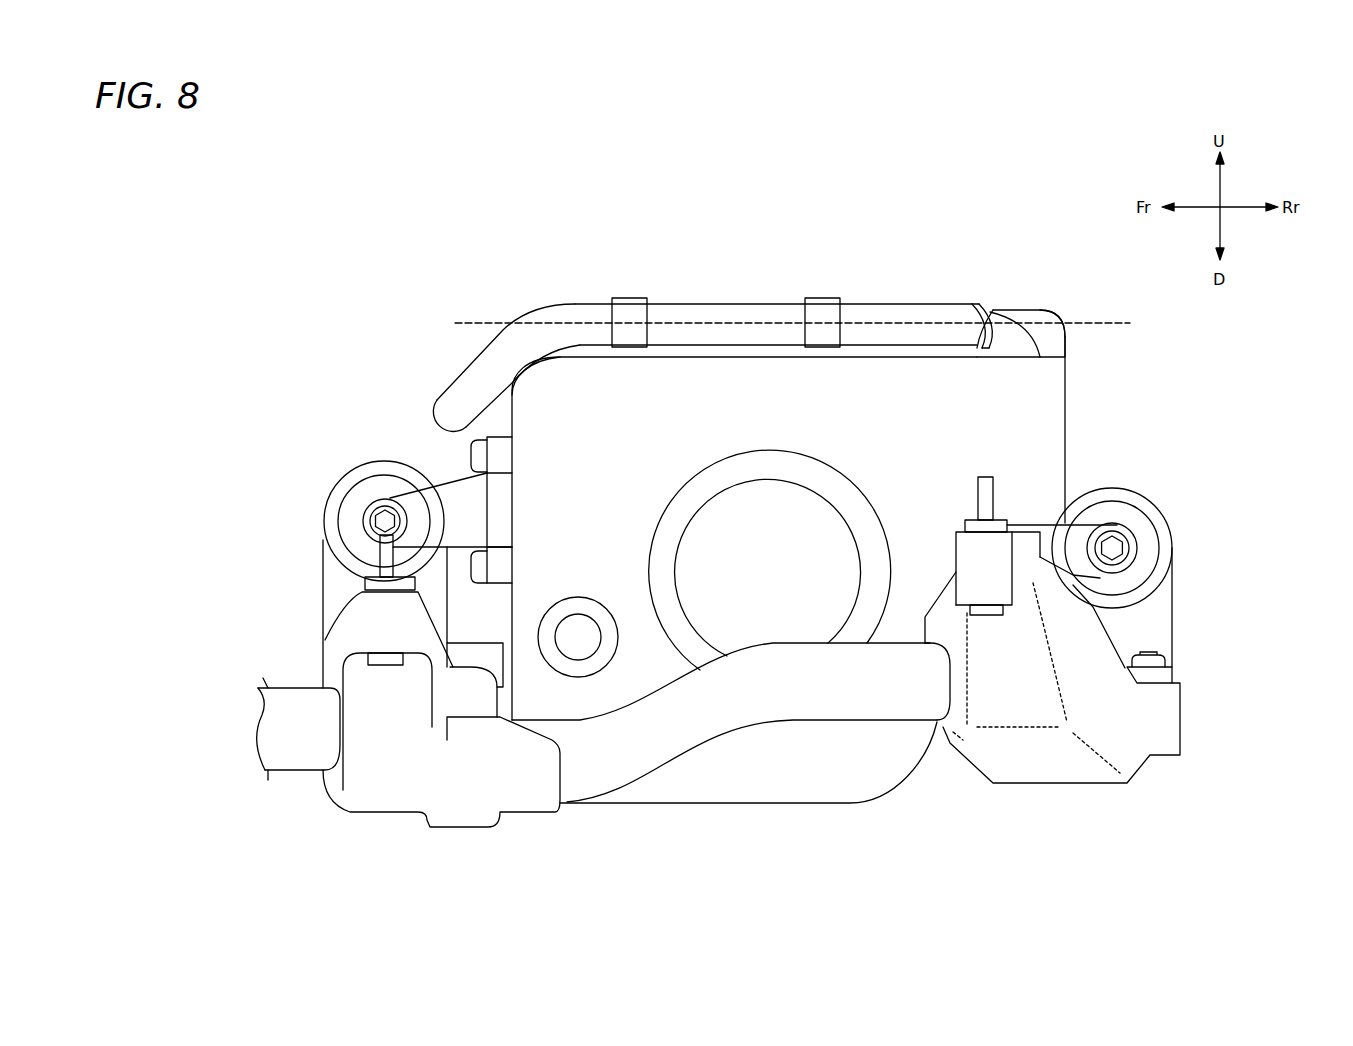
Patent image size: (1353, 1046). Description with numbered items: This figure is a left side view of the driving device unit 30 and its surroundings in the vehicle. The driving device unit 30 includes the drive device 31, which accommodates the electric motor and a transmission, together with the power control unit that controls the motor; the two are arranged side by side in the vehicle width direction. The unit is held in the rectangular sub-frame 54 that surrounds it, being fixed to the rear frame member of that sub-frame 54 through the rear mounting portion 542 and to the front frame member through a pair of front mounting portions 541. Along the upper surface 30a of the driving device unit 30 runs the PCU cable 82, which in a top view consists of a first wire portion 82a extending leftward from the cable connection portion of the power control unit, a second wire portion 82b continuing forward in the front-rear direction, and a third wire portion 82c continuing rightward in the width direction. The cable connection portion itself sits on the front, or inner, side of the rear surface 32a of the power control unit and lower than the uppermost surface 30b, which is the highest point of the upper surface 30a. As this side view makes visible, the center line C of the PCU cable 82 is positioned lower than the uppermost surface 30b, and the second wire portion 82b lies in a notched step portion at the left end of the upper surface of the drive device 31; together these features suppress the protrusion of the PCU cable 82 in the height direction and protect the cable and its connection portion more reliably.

The driving device unit 30 is at (1076, 410).
The upper surface 30a is at (740, 343).
The uppermost surface 30b is at (1020, 310).
The drive device 31 is at (565, 448).
The rear surface 32a is at (1067, 348).
The sub-frame 54 is at (1185, 713).
The front mounting portion 541 is at (1172, 597).
The rear mounting portion 542 is at (323, 548).
The PCU cable 82 is at (726, 329).
The first wire portion 82a is at (1000, 308).
The second wire portion 82b is at (735, 302).
The third wire portion 82c is at (528, 303).
The center line C is at (1095, 323).